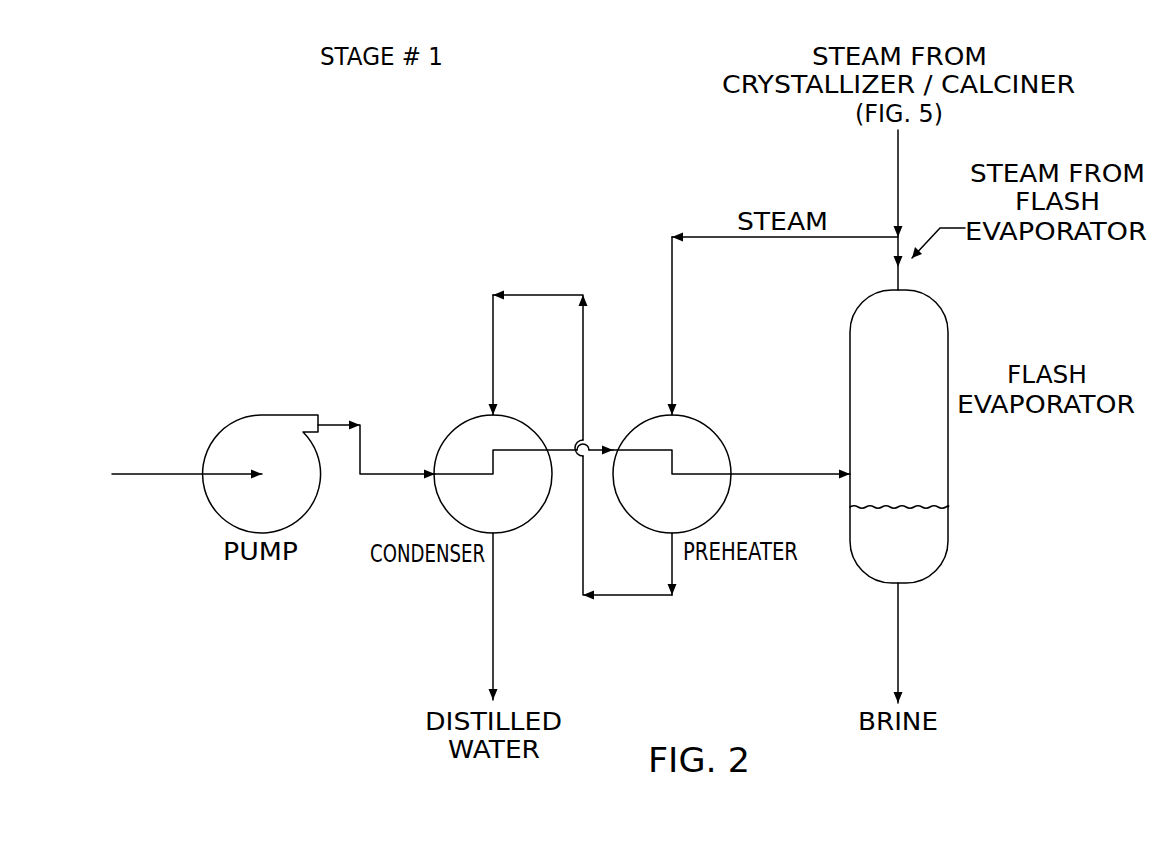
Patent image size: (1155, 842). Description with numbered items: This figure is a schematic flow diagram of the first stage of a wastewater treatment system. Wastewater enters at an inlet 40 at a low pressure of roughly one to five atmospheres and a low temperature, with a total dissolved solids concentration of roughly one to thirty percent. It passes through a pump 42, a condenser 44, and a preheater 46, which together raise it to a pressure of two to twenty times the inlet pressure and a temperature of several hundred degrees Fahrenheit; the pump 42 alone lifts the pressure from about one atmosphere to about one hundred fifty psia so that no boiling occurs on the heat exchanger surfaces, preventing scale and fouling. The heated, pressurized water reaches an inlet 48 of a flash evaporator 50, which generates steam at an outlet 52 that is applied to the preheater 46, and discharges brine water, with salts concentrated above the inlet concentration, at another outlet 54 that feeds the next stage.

The inlet 40 is at (163, 476).
The pump 42 is at (225, 432).
The condenser 44 is at (455, 432).
The preheater 46 is at (710, 428).
The inlet to flash evaporator 48 is at (780, 474).
The flash evaporator 50 is at (948, 478).
The steam outlet 52 is at (895, 265).
The brine water outlet 54 is at (900, 648).